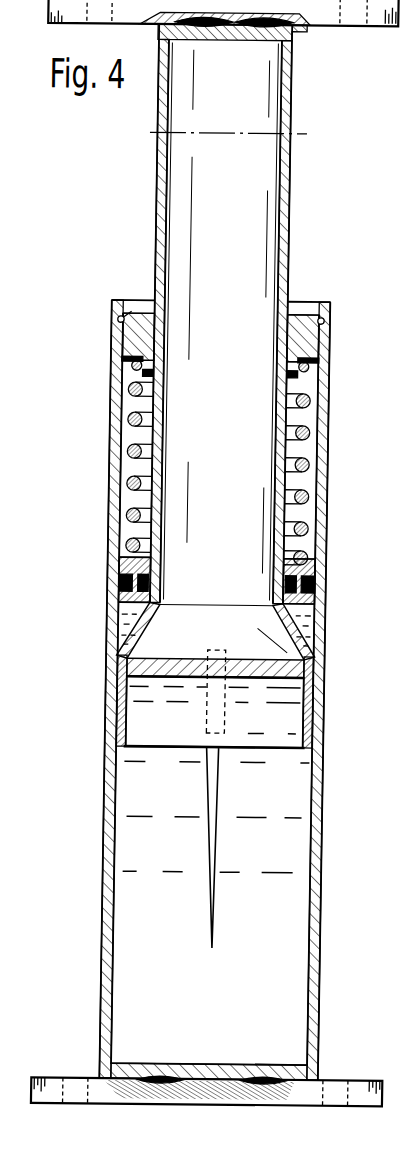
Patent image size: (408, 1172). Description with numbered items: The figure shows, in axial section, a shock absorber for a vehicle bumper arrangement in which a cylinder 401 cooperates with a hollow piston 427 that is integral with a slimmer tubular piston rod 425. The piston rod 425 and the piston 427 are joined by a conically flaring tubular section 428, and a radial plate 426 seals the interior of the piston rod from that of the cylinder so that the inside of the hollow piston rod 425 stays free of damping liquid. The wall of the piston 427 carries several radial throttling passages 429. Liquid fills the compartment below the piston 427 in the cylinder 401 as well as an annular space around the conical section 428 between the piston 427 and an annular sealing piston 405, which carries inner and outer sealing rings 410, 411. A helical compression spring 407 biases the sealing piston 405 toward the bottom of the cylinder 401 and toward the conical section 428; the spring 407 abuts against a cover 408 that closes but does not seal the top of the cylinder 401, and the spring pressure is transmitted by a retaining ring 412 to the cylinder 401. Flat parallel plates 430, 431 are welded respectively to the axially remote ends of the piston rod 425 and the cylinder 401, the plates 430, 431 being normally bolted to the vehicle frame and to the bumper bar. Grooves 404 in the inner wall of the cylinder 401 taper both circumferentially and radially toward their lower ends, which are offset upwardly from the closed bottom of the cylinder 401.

The cylinder 401 is at (319, 946).
The grooves 404 is at (120, 774).
The annular sealing piston 405 is at (304, 562).
The helical compression spring 407 is at (142, 416).
The cover 408 is at (298, 341).
The inner sealing ring 410 is at (310, 584).
The outer sealing ring 411 is at (148, 583).
The retaining ring 412 is at (319, 320).
The tubular piston rod 425 is at (154, 230).
The radial plate 426 is at (234, 696).
The hollow piston 427 is at (130, 724).
The conically flaring tubular section 428 is at (141, 638).
The radial throttling passages 429 is at (119, 683).
The flat plate 430 is at (321, 25).
The flat plate 431 is at (354, 1051).